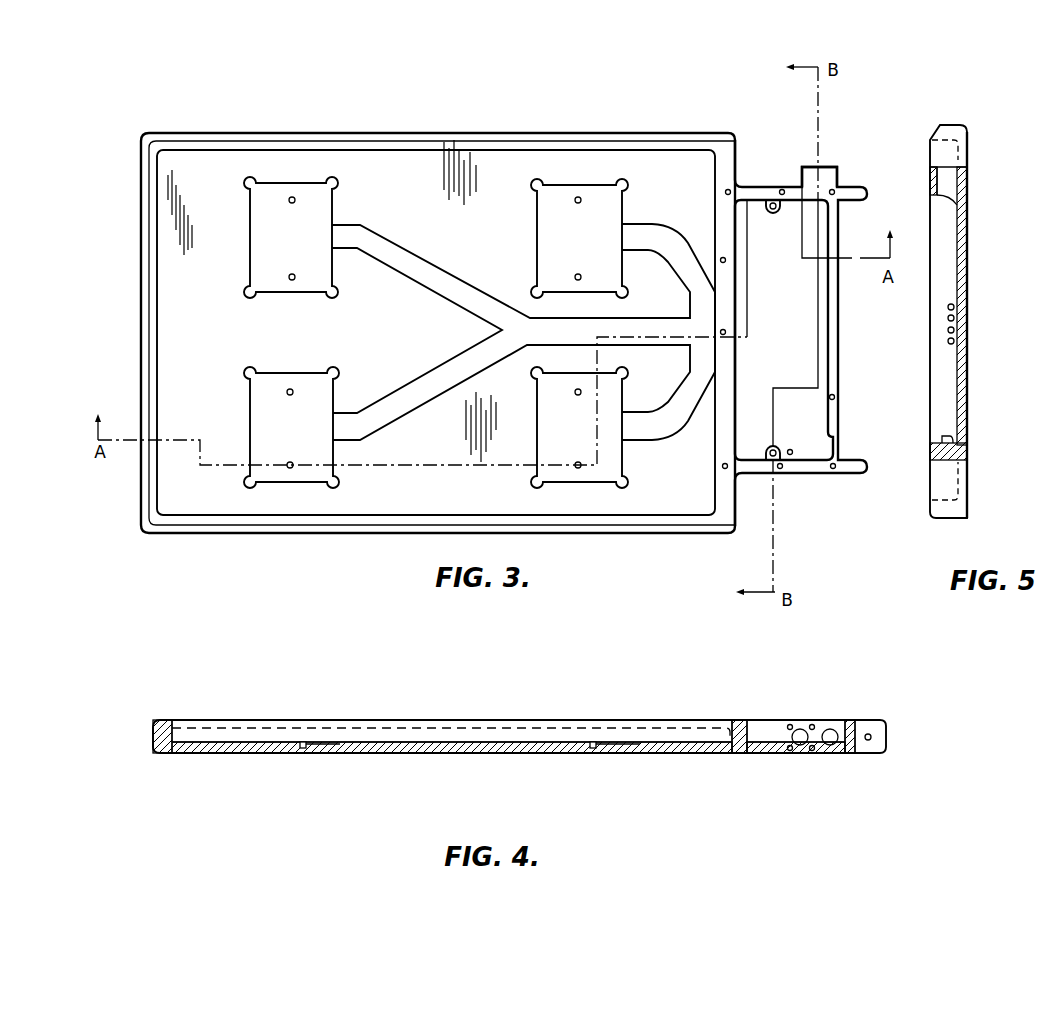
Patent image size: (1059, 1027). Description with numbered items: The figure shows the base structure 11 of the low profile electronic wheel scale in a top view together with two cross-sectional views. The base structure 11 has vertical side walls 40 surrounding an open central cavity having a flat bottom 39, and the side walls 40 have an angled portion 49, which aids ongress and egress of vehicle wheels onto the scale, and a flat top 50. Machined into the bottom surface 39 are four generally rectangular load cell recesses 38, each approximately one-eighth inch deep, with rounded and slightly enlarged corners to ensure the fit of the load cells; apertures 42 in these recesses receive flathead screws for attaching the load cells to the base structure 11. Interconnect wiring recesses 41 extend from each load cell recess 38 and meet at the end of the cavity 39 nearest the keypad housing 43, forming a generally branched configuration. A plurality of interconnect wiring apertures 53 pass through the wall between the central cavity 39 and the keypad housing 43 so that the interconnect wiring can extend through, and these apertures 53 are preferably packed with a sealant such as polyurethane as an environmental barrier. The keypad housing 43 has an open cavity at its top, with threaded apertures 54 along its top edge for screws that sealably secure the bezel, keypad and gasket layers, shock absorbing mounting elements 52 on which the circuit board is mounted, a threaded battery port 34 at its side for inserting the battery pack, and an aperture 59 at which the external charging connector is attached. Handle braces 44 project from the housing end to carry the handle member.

In FIG. 3, the base structure 11 is at (440, 114).
In FIG. 5, the base structure 11 is at (935, 110).
In FIG. 4, the base structure 11 is at (521, 714).
In FIG. 5, the threaded battery port 34 is at (948, 180).
In FIG. 4, the threaded battery port 34 is at (835, 725).
In FIG. 3, the load cell recesses 38 is at (277, 281).
In FIG. 4, the load cell recesses 38 is at (331, 753).
In FIG. 3, the flat bottom 39 is at (381, 346).
In FIG. 5, the flat bottom 39 is at (969, 145).
In FIG. 4, the flat bottom 39 is at (416, 746).
In FIG. 3, the vertical side walls 40 is at (720, 428).
In FIG. 4, the vertical side walls 40 is at (178, 735).
In FIG. 3, the interconnect wiring recesses 41 is at (393, 240).
In FIG. 3, the apertures 42 is at (576, 276).
In FIG. 4, the apertures 42 is at (304, 753).
In FIG. 3, the keypad housing 43 is at (803, 483).
In FIG. 5, the keypad housing 43 is at (969, 238).
In FIG. 4, the keypad housing 43 is at (796, 714).
In FIG. 3, the handle braces 44 is at (849, 183).
In FIG. 4, the handle braces 44 is at (880, 722).
In FIG. 3, the angled portion 49 is at (698, 130).
In FIG. 5, the angled portion 49 is at (934, 515).
In FIG. 4, the angled portion 49 is at (152, 722).
In FIG. 3, the flat top 50 is at (722, 161).
In FIG. 5, the flat top 50 is at (930, 502).
In FIG. 4, the flat top 50 is at (165, 718).
In FIG. 3, the shock absorbing mounting elements 52 is at (776, 207).
In FIG. 5, the shock absorbing mounting elements 52 is at (940, 440).
In FIG. 5, the interconnect wiring apertures 53 is at (948, 307).
In FIG. 4, the interconnect wiring apertures 53 is at (740, 753).
In FIG. 3, the threaded apertures 54 is at (721, 401).
In FIG. 4, the aperture 59 is at (804, 753).